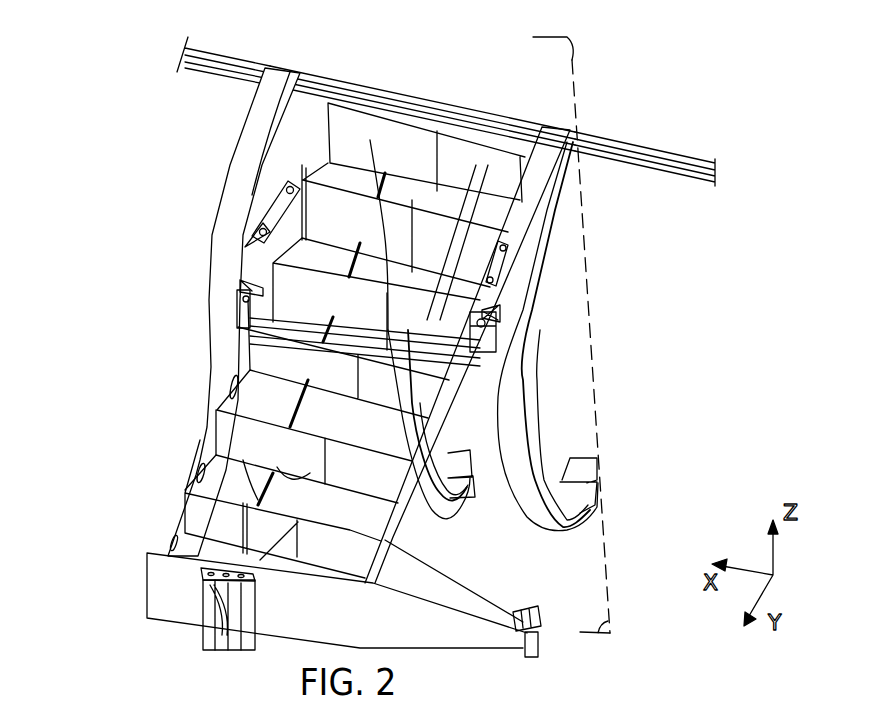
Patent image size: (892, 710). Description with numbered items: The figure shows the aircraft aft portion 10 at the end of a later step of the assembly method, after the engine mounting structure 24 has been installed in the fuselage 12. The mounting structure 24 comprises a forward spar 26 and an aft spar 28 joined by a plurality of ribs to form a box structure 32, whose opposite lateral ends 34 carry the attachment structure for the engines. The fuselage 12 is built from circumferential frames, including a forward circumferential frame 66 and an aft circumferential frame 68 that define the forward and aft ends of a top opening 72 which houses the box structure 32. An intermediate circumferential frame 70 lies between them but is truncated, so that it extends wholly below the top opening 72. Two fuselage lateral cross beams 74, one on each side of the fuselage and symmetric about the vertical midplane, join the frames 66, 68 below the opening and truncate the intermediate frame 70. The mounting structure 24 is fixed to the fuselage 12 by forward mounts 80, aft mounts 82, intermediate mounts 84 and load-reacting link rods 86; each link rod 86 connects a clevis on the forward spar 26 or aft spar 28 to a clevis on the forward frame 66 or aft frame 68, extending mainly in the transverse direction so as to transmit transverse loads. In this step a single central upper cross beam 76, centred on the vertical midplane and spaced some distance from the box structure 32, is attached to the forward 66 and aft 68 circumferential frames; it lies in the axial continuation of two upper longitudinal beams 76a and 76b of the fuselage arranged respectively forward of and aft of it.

The aircraft aft portion 10 is at (142, 378).
The fuselage 12 is at (223, 156).
The mounting structure 24 is at (171, 497).
The box structure 32 is at (283, 509).
The forward spar 26 is at (215, 437).
The aft spar 28 is at (400, 532).
The lateral ends 34 is at (160, 598).
The forward circumferential frame 66 is at (267, 93).
The aft circumferential frame 68 is at (545, 190).
The intermediate circumferential frame 70 is at (427, 463).
The top opening 72 is at (312, 120).
The fuselage lateral cross beams 74 is at (483, 377).
The central upper cross beam 76 is at (437, 98).
The upper longitudinal beam 76a is at (264, 66).
The upper longitudinal beam 76b is at (682, 160).
The forward mounts 80 is at (240, 313).
The aft mounts 82 is at (493, 337).
The intermediate mounts 84 is at (370, 140).
The load-reacting link rods 86 is at (277, 211).